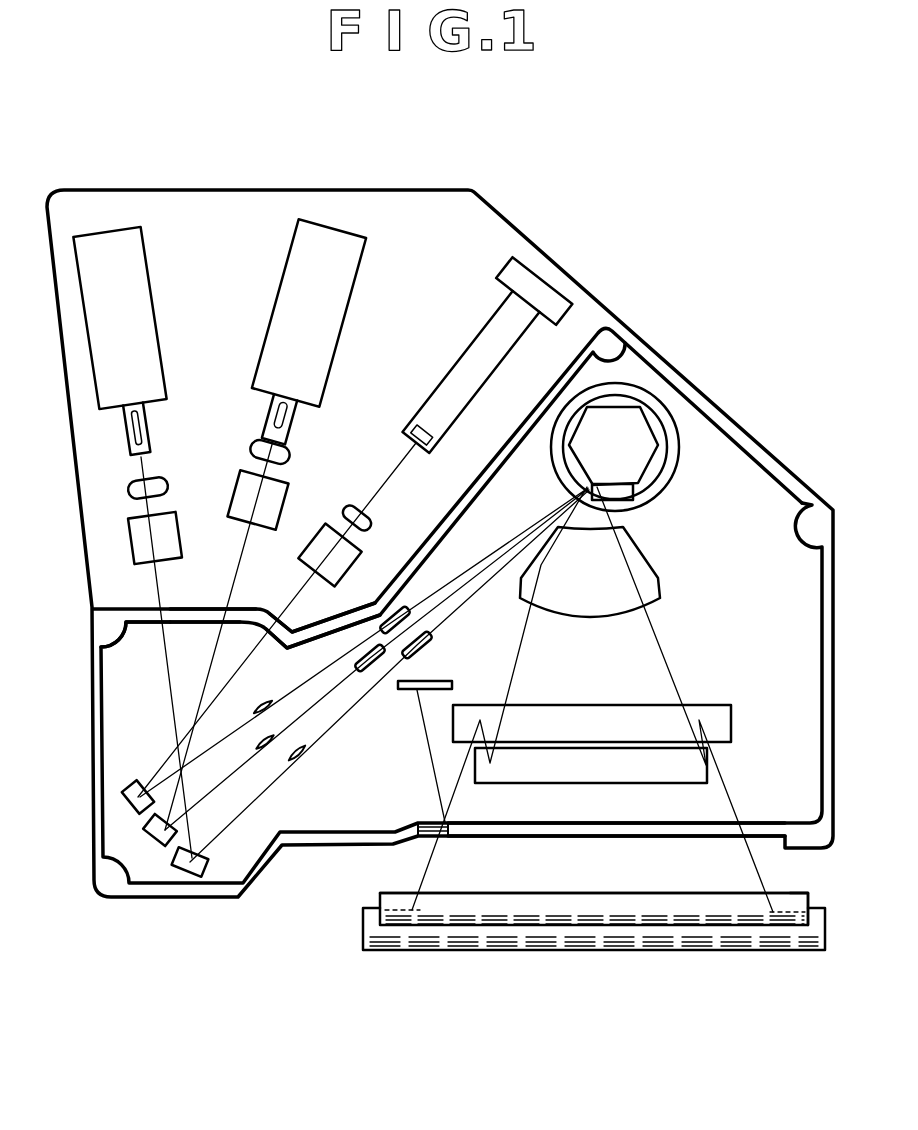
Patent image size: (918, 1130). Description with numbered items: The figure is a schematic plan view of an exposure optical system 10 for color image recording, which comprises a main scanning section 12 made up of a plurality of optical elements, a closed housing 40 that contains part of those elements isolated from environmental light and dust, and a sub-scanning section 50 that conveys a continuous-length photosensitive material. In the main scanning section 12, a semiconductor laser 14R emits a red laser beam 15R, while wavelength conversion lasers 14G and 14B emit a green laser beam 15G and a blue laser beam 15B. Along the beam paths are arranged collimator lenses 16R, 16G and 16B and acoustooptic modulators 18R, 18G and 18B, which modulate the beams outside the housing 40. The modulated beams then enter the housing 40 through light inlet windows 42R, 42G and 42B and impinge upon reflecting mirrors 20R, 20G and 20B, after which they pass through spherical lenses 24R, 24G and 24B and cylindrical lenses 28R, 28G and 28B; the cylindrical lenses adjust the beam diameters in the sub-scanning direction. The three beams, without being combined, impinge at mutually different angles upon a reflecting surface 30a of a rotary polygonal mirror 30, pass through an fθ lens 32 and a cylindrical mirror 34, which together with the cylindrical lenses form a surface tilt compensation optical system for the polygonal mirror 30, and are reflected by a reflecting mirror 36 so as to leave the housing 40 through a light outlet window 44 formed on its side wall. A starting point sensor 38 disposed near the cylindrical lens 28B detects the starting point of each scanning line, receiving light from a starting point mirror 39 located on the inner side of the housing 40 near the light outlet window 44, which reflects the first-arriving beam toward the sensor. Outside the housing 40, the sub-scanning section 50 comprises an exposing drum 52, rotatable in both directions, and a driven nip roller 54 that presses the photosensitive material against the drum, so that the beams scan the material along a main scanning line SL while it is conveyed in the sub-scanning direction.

The exposure optical system 10 is at (648, 262).
The main scanning section 12 is at (108, 541).
The wavelength conversion laser 14B is at (140, 318).
The wavelength conversion laser 14G is at (296, 266).
The semiconductor laser 14R is at (468, 356).
The blue laser beam 15B is at (160, 590).
The green laser beam 15G is at (243, 542).
The red laser beam 15R is at (208, 704).
The collimator lens 16B is at (153, 478).
The collimator lens 16G is at (260, 440).
The collimator lens 16R is at (373, 520).
The acoustooptic modulator 18B is at (170, 524).
The acoustooptic modulator 18G is at (277, 494).
The acoustooptic modulator 18R is at (347, 563).
The reflecting mirror 20R is at (130, 781).
The reflecting mirror 20G is at (160, 845).
The reflecting mirror 20B is at (197, 873).
The spherical lens 24R is at (266, 694).
The spherical lens 24G is at (272, 757).
The spherical lens 24B is at (307, 752).
The cylindrical lens 28R is at (410, 603).
The cylindrical lens 28B is at (430, 633).
The cylindrical lens 28G is at (393, 663).
The rotary polygonal mirror 30 is at (641, 455).
The reflecting surface 30a is at (633, 503).
The fθ lens 32 is at (655, 590).
The cylindrical mirror 34 is at (708, 768).
The reflecting mirror 36 is at (728, 706).
The starting point sensor 38 is at (450, 690).
The starting point mirror 39 is at (423, 820).
The closed housing 40 is at (702, 395).
The light inlet window 42R is at (270, 612).
The light inlet window 42G is at (190, 610).
The light inlet window 42B is at (158, 625).
The light outlet window 44 is at (672, 834).
The sub-scanning section 50 is at (356, 941).
The exposing drum 52 is at (378, 912).
The nip roller 54 is at (790, 897).
The main scanning line SL is at (549, 905).